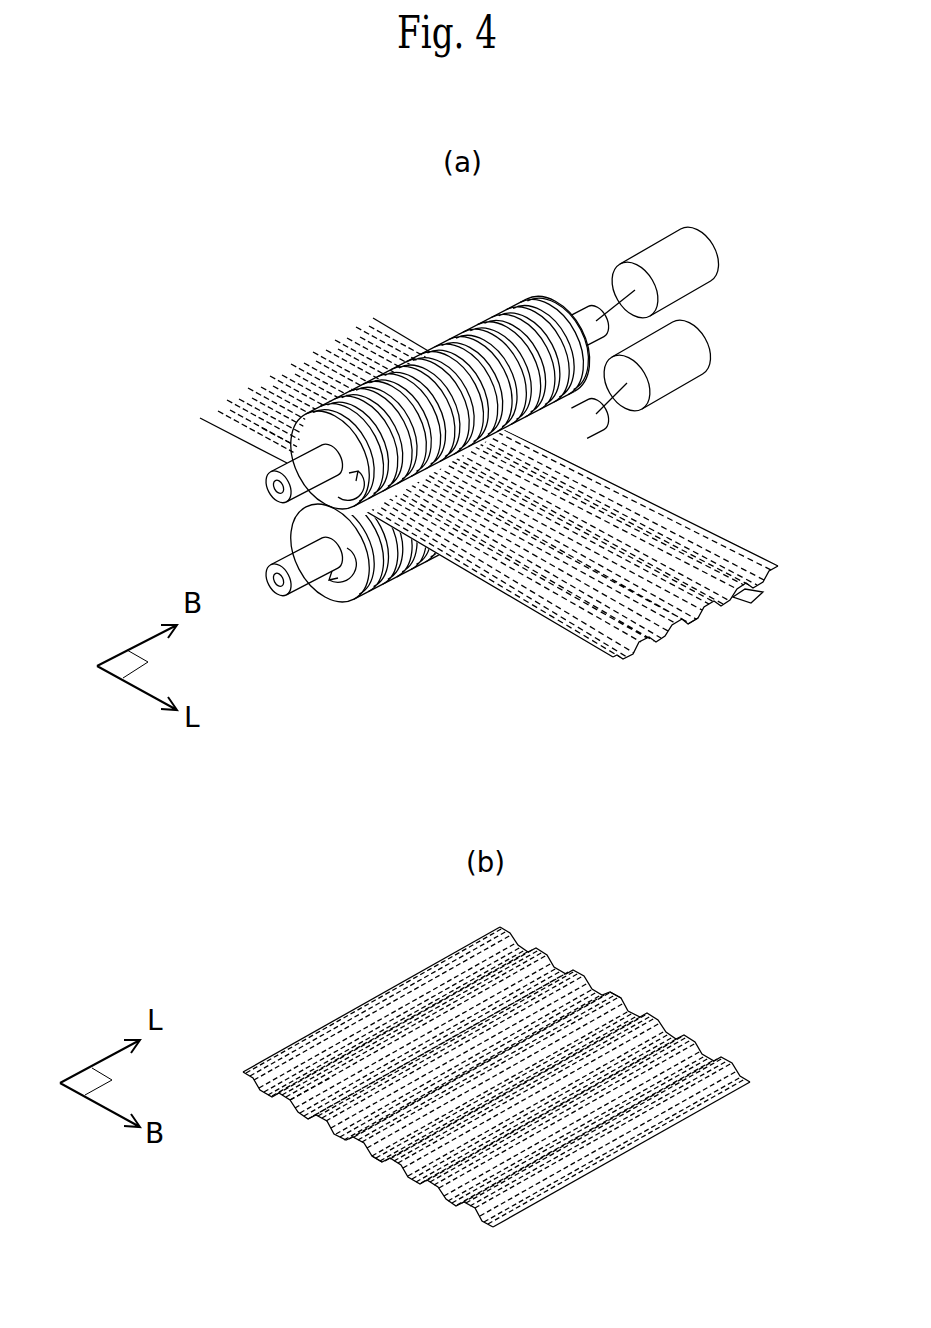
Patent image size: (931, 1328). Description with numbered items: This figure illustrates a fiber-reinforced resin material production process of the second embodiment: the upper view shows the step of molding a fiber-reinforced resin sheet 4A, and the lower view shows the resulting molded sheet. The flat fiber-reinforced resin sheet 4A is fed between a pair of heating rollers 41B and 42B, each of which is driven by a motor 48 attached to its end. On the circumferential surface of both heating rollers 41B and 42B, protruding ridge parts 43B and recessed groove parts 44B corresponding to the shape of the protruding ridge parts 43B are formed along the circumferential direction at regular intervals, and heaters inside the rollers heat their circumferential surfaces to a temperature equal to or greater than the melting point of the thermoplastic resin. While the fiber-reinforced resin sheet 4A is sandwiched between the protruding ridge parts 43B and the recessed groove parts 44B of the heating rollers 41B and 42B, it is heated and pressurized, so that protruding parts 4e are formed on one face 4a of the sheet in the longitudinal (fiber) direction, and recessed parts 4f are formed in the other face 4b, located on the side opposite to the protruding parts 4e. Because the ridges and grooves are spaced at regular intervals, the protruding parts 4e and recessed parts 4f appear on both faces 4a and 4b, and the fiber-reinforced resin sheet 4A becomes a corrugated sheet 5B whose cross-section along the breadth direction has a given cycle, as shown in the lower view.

The fiber-reinforced resin sheet 4A is at (380, 345).
The protruding ridge parts 43B is at (463, 333).
The heating roller 41B is at (278, 510).
The recessed groove parts 44B is at (403, 563).
The heating roller 42B is at (272, 594).
The motor 48 is at (695, 255).
The corrugated sheet 5B is at (737, 557).
The recessed parts 4f is at (750, 590).
The protruding parts 4e is at (688, 632).
The other face 4b is at (232, 415).
The one face 4a is at (265, 432).